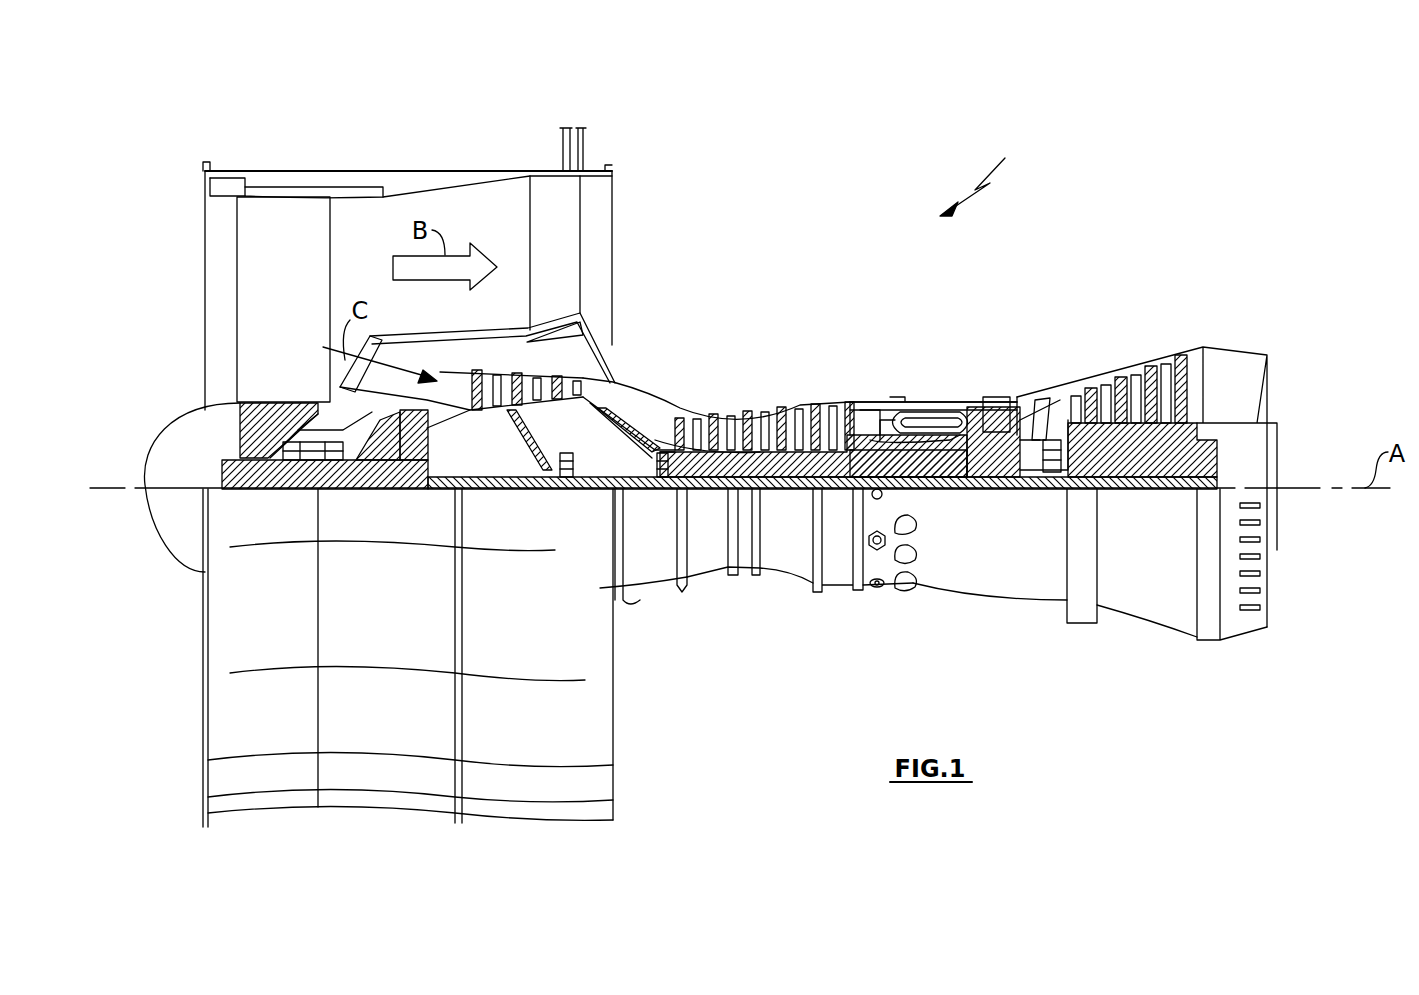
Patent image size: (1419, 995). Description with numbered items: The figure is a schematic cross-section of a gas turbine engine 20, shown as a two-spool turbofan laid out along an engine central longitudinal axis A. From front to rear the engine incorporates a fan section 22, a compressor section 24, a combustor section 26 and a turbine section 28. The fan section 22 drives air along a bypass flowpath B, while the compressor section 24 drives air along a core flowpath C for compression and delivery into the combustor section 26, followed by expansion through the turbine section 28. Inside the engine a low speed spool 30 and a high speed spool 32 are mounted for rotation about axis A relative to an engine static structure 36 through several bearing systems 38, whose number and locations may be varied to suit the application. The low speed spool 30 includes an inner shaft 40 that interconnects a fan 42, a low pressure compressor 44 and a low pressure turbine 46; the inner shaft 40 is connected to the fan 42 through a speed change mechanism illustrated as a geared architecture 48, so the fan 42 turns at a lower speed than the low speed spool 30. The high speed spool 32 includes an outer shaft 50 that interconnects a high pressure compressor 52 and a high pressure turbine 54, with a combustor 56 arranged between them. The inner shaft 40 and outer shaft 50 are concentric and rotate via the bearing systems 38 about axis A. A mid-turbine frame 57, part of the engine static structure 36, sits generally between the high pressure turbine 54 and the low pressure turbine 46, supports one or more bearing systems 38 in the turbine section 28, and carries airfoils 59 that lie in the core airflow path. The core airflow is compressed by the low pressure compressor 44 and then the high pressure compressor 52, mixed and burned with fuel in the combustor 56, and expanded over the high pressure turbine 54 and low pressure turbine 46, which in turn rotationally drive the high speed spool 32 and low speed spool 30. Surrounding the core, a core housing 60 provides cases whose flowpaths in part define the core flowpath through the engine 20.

The gas turbine engine 20 is at (987, 177).
The fan section 22 is at (328, 163).
The compressor section 24 is at (678, 387).
The combustor section 26 is at (920, 374).
The turbine section 28 is at (1085, 330).
The low speed spool 30 is at (790, 492).
The high speed spool 32 is at (833, 447).
The engine static structure 36 is at (835, 592).
The bearing systems 38 is at (567, 480).
The inner shaft 40 is at (632, 493).
The fan 42 is at (266, 313).
The low pressure compressor 44 is at (613, 328).
The low pressure turbine 46 is at (1137, 370).
The geared architecture 48 is at (415, 470).
The outer shaft 50 is at (930, 460).
The high pressure compressor 52 is at (763, 458).
The high pressure turbine 54 is at (1000, 400).
The combustor 56 is at (922, 420).
The mid-turbine frame 57 is at (1043, 385).
The airfoils 59 is at (1040, 420).
The core housing 60 is at (642, 397).